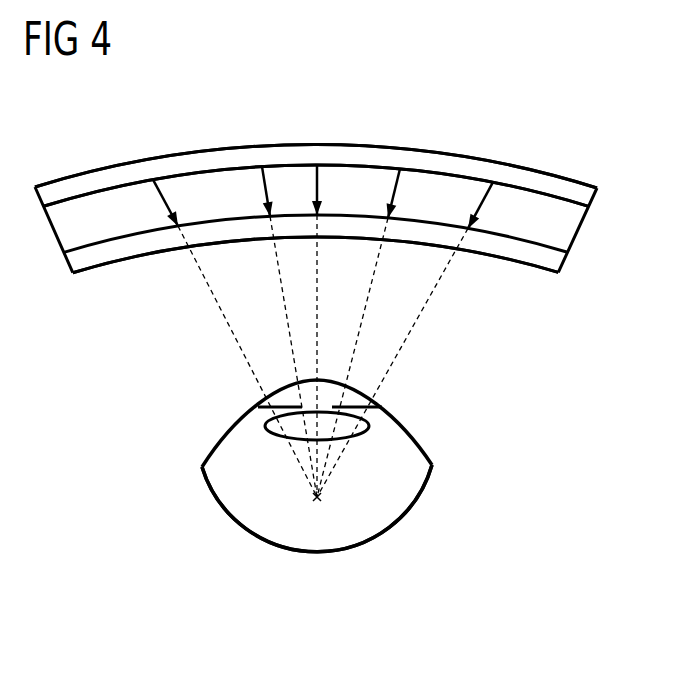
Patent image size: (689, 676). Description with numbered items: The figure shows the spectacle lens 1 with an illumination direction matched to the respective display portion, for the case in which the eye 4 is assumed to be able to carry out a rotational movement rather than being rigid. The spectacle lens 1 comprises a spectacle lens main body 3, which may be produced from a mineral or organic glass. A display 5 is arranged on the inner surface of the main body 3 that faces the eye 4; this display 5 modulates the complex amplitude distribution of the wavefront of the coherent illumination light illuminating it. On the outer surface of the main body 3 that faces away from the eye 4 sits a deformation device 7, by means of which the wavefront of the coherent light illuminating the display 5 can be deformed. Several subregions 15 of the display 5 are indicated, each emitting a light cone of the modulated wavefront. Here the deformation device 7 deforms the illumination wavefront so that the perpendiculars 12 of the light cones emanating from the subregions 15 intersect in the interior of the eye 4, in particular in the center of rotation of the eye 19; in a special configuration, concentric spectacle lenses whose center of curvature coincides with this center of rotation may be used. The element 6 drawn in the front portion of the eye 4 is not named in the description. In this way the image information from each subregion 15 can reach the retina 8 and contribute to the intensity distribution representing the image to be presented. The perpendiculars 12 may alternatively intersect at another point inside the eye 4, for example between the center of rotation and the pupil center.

The spectacle lens 1 is at (397, 101).
The spectacle lens main body 3 is at (461, 190).
The eye 4 is at (425, 497).
The display 5 is at (510, 250).
The lens of the eye 6 is at (350, 423).
The deformation device 7 is at (363, 153).
The retina 8 is at (407, 576).
The perpendiculars of the light cones 12 is at (317, 297).
The subregion of the display 15 is at (165, 222).
The center of rotation of the eye 19 is at (317, 498).